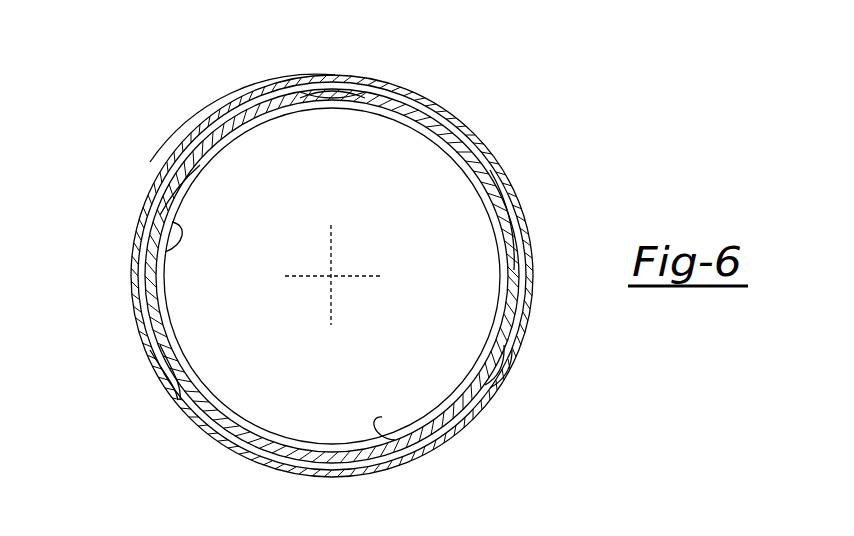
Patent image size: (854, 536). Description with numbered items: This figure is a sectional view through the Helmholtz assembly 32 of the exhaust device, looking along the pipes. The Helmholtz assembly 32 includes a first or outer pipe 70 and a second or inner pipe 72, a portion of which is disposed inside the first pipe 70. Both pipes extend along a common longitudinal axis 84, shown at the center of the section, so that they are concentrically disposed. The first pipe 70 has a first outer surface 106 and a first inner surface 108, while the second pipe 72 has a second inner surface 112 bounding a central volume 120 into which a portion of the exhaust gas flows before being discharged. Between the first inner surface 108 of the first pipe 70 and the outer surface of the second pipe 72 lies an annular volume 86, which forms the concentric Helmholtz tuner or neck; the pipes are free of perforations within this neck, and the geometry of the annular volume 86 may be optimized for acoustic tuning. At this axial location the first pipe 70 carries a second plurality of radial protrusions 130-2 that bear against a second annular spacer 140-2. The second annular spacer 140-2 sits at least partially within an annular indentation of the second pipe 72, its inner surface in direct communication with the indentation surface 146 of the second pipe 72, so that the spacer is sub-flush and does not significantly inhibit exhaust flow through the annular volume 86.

The Helmholtz assembly 32 is at (124, 77).
The first pipe 70 is at (455, 118).
The second pipe 72 is at (480, 173).
The longitudinal axis 84 is at (345, 284).
The annular volume 86 is at (215, 120).
The first outer surface 106 is at (165, 190).
The first inner surface 108 is at (385, 423).
The second inner surface 112 is at (177, 250).
The central volume 120 is at (417, 368).
The second plurality of radial protrusions 130-2 is at (330, 88).
The second annular spacer 140-2 is at (500, 215).
The indentation surface 146 is at (175, 193).